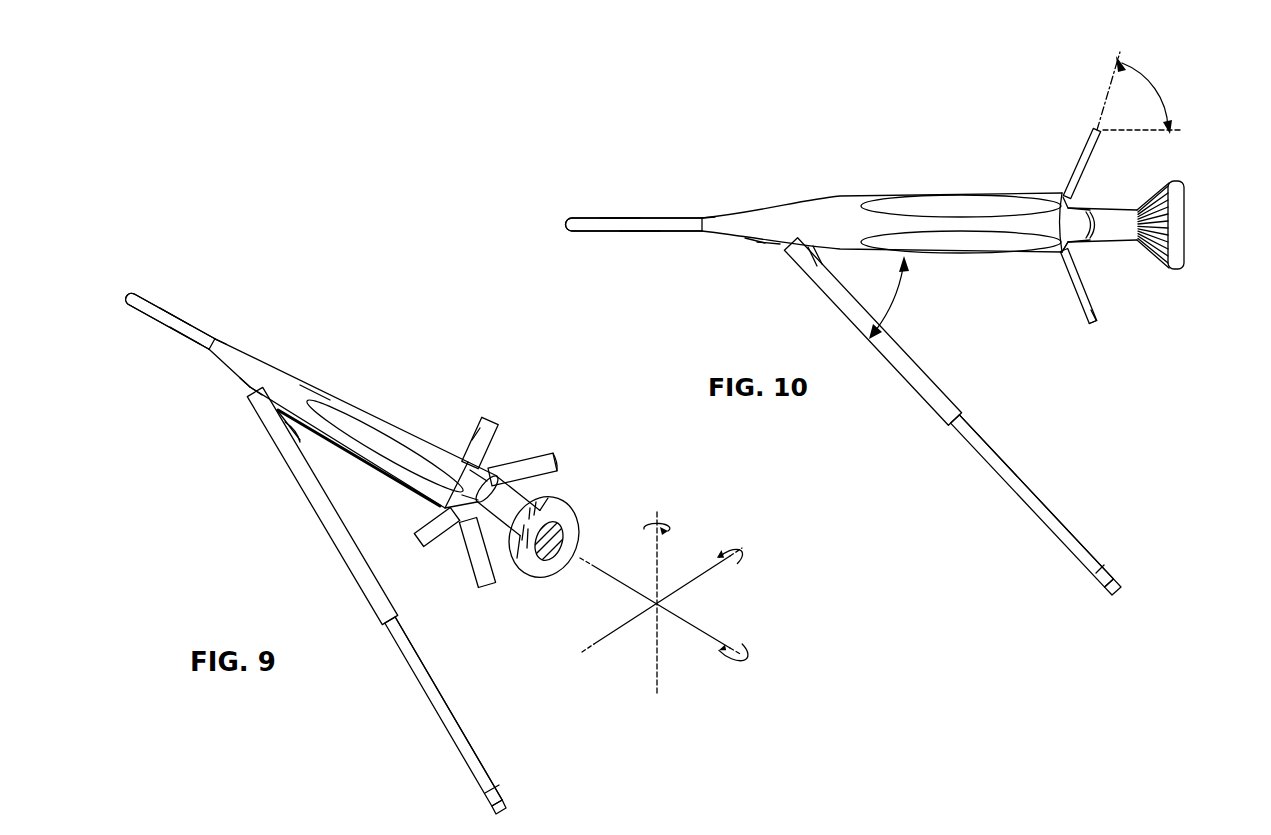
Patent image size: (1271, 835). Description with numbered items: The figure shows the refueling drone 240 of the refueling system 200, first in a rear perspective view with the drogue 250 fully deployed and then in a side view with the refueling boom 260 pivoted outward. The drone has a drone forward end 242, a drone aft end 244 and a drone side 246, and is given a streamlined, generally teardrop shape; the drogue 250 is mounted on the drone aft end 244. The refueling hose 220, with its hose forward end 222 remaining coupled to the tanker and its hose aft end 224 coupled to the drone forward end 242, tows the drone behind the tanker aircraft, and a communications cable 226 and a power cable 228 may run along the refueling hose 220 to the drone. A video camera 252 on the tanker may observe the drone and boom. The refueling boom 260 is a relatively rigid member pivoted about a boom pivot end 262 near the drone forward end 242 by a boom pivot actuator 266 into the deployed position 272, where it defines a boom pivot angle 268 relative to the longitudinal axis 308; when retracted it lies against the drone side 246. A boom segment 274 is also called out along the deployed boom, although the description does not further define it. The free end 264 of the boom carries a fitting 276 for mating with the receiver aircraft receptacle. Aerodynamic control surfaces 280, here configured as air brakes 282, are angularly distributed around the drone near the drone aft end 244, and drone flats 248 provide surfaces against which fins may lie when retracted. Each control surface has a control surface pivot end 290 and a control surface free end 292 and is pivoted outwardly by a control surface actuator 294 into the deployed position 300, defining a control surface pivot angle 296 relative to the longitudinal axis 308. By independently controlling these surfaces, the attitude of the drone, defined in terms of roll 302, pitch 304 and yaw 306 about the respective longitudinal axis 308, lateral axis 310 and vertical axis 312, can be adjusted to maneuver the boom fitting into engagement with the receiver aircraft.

In FIG. 9, the refueling system 200 is at (154, 291).
In FIG. 10, the refueling system 200 is at (590, 216).
In FIG. 9, the refueling hose 220 is at (152, 319).
In FIG. 10, the hose forward end 222 is at (619, 233).
In FIG. 9, the hose aft end 224 is at (210, 338).
In FIG. 10, the hose aft end 224 is at (694, 216).
In FIG. 9, the communications cable 226 is at (182, 340).
In FIG. 10, the communications cable 226 is at (638, 234).
In FIG. 9, the power cable 228 is at (180, 316).
In FIG. 10, the power cable 228 is at (618, 216).
In FIG. 9, the refueling drone 240 is at (325, 378).
In FIG. 10, the refueling drone 240 is at (817, 204).
In FIG. 9, the drone forward end 242 is at (217, 339).
In FIG. 10, the drone forward end 242 is at (708, 216).
In FIG. 9, the drone aft end 244 is at (548, 487).
In FIG. 10, the drone aft end 244 is at (1102, 225).
In FIG. 9, the drone side 246 is at (360, 400).
In FIG. 10, the drone side 246 is at (852, 203).
In FIG. 9, the drone flats 248 is at (402, 438).
In FIG. 10, the drone flats 248 is at (930, 202).
In FIG. 9, the drogue 250 is at (540, 573).
In FIG. 10, the drogue 250 is at (1186, 225).
In FIG. 9, the video camera 252 is at (248, 392).
In FIG. 10, the video camera 252 is at (752, 241).
In FIG. 9, the refueling boom 260 is at (338, 547).
In FIG. 10, the refueling boom 260 is at (898, 390).
In FIG. 9, the boom pivot end 262 is at (250, 396).
In FIG. 10, the boom pivot end 262 is at (756, 244).
In FIG. 9, the free end 264 is at (482, 804).
In FIG. 10, the free end 264 is at (1090, 578).
In FIG. 9, the boom pivot actuator 266 is at (286, 446).
In FIG. 10, the boom pivot actuator 266 is at (821, 263).
In FIG. 10, the boom pivot angle 268 is at (902, 303).
In FIG. 9, the deployed position 272 is at (430, 703).
In FIG. 10, the deployed position 272 is at (1002, 492).
In FIG. 9, the rod outer surface 274 is at (453, 713).
In FIG. 10, the rod outer surface 274 is at (1050, 515).
In FIG. 9, the fitting 276 is at (508, 804).
In FIG. 10, the fitting 276 is at (1118, 586).
In FIG. 9, the control surfaces 280 is at (544, 447).
In FIG. 10, the control surfaces 280 is at (1077, 147).
In FIG. 9, the air brakes 282 is at (587, 454).
In FIG. 10, the air brakes 282 is at (1078, 280).
In FIG. 9, the control surface pivot end 290 is at (491, 465).
In FIG. 10, the control surface pivot end 290 is at (1064, 200).
In FIG. 9, the control surface free end 292 is at (487, 412).
In FIG. 10, the control surface free end 292 is at (1093, 325).
In FIG. 9, the control surface actuator 294 is at (457, 520).
In FIG. 10, the control surface actuator 294 is at (1085, 253).
In FIG. 10, the control surface pivot angle 296 is at (1157, 81).
In FIG. 9, the deployed position 300 is at (486, 592).
In FIG. 10, the deployed position 300 is at (1097, 306).
In FIG. 9, the roll 302 is at (725, 656).
In FIG. 9, the pitch 304 is at (740, 568).
In FIG. 9, the yaw 306 is at (665, 520).
In FIG. 9, the longitudinal axis 308 is at (703, 633).
In FIG. 9, the lateral axis 310 is at (623, 637).
In FIG. 9, the vertical axis 312 is at (653, 572).